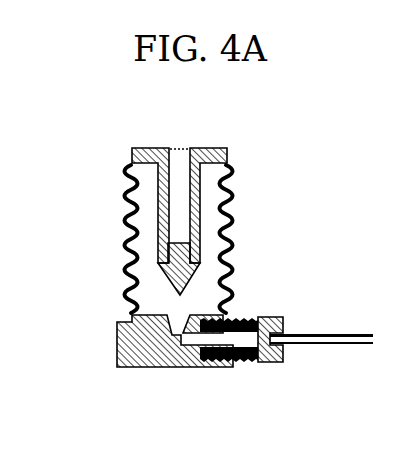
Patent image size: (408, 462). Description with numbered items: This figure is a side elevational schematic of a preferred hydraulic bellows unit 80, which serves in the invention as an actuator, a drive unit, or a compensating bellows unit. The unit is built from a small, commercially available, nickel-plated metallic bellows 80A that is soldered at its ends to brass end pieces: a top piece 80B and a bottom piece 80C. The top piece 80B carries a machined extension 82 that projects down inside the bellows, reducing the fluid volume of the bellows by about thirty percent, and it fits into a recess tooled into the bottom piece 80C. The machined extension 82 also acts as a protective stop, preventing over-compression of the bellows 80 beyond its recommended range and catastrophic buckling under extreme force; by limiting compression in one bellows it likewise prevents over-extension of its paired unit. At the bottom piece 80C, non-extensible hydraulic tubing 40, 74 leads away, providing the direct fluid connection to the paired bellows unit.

The hydraulic bellows unit 80 is at (93, 169).
The metallic bellows 80A is at (232, 237).
The top piece 80B is at (190, 148).
The bottom piece 80C is at (152, 368).
The machined extension 82 is at (157, 250).
The hydraulic tubing 40 is at (302, 345).
The fiber lead 74 is at (302, 345).